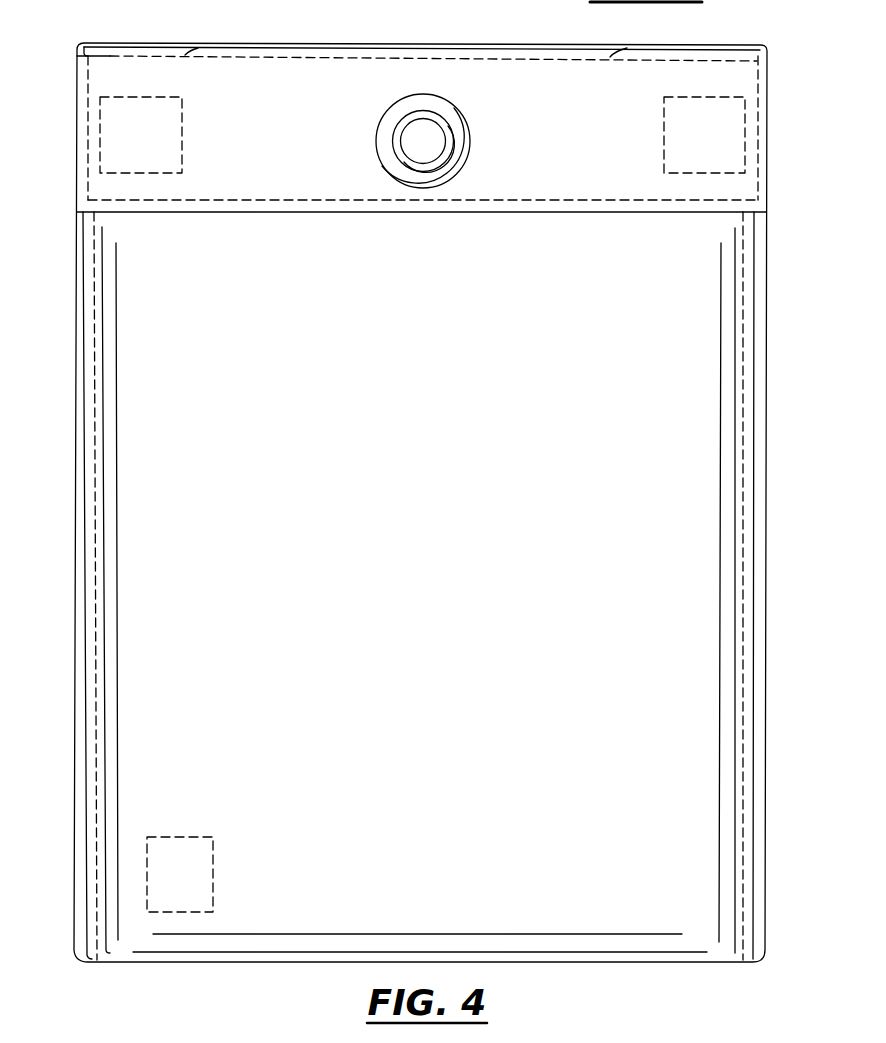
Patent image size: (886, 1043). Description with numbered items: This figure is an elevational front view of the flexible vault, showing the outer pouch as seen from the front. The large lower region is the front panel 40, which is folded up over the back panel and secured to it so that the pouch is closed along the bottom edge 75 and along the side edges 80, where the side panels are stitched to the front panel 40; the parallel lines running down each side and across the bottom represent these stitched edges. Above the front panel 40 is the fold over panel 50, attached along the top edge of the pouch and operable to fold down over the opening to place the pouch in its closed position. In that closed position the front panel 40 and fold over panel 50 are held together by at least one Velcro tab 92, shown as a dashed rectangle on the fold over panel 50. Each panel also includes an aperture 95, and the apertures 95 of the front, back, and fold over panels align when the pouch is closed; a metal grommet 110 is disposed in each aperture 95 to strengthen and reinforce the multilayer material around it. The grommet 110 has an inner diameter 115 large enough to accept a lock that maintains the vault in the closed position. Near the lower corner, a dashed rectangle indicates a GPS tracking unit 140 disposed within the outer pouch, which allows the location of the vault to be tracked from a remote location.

The front panel 40 is at (150, 454).
The fold over panel 50 is at (243, 122).
The bottom edge 75 is at (207, 963).
The side edges 80 is at (82, 547).
The Velcro tab 92 is at (713, 157).
The aperture 95 is at (427, 133).
The metal grommet 110 is at (383, 130).
The inner diameter 115 is at (443, 125).
The GPS tracking unit 140 is at (183, 889).